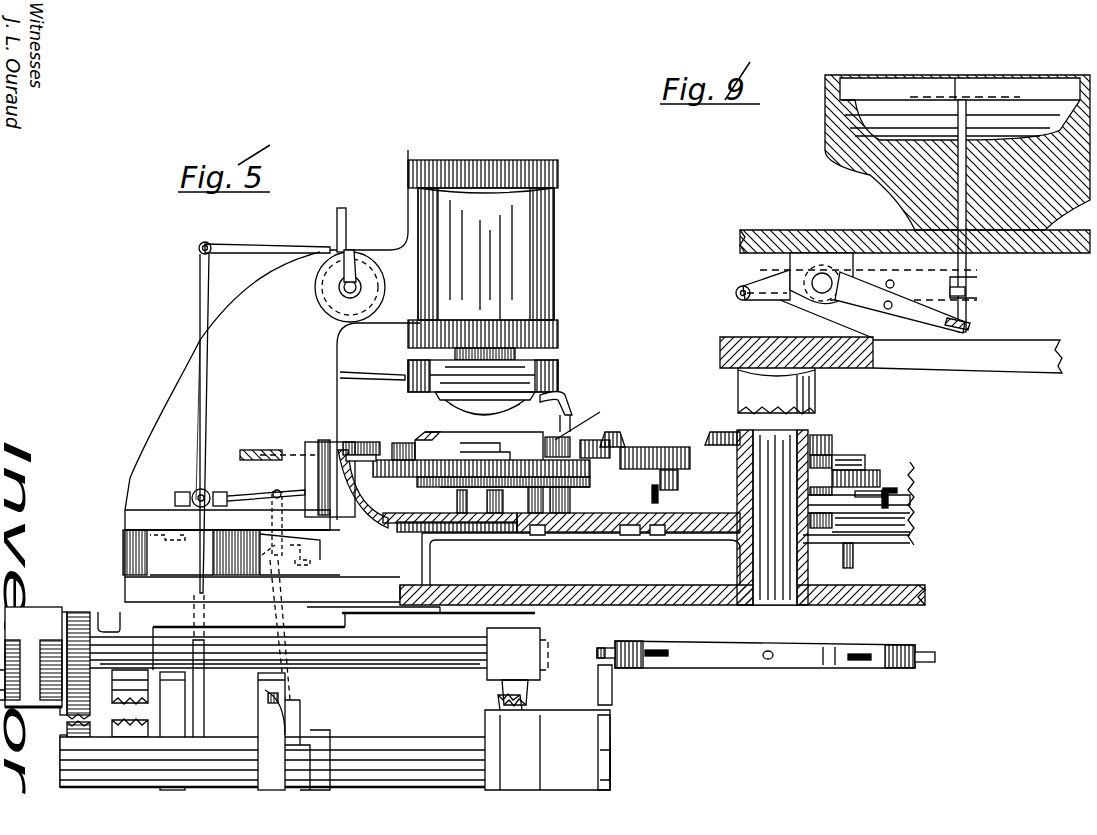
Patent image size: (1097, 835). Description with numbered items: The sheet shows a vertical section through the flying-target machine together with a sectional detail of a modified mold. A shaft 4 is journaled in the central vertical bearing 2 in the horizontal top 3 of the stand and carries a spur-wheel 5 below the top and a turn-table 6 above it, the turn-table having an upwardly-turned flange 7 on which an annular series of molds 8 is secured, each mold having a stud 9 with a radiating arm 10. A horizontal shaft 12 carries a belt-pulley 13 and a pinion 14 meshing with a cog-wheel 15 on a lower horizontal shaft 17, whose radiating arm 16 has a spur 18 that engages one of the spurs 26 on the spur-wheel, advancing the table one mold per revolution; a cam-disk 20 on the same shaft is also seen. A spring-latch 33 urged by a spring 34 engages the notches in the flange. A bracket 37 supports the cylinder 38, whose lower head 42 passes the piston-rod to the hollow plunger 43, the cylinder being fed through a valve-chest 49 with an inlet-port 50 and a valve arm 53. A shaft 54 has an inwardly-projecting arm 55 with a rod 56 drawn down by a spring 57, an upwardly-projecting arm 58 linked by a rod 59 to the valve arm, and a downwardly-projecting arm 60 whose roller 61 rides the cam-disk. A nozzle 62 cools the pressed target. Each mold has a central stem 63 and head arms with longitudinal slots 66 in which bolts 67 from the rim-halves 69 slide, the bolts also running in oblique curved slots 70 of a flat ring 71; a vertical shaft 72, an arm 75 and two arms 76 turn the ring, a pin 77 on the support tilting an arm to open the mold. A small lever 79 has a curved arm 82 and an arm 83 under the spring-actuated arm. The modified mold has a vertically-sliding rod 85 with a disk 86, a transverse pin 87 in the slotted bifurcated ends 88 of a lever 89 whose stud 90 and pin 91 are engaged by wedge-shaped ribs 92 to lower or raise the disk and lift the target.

In FIG. 5, the central vertical bearing 2 is at (662, 582).
In FIG. 5, the horizontal top 3 is at (432, 570).
In FIG. 5, the shaft 4 is at (772, 517).
In FIG. 5, the spur-wheel 5 is at (675, 652).
In FIG. 5, the turn-table 6 is at (383, 518).
In FIG. 5, the flange 7 is at (363, 489).
In FIG. 5, the mold 8 is at (600, 440).
In FIG. 5, the stud 9 is at (363, 435).
In FIG. 5, the radiating arm 10 is at (361, 446).
In FIG. 5, the horizontal shaft 12 is at (388, 660).
In FIG. 5, the belt-pulley 13 is at (31, 657).
In FIG. 5, the pinion 14 is at (92, 606).
In FIG. 5, the cog-wheel 15 is at (372, 369).
In FIG. 5, the radiating arm 16 is at (610, 726).
In FIG. 5, the horizontal shaft 17 is at (388, 760).
In FIG. 5, the spur 18 is at (597, 648).
In FIG. 5, the cam-disk 20 is at (148, 731).
In FIG. 5, the spur 26 is at (945, 660).
In FIG. 5, the spring-latch 33 is at (287, 441).
In FIG. 5, the spring 34 is at (261, 446).
In FIG. 5, the bracket 37 is at (272, 335).
In FIG. 5, the cylinder 38 is at (483, 240).
In FIG. 5, the lower head 42 is at (558, 345).
In FIG. 5, the hollow plunger 43 is at (483, 387).
In FIG. 5, the valve-chest 49 is at (350, 287).
In FIG. 5, the inlet-port 50 is at (354, 230).
In FIG. 5, the arm 53 is at (356, 268).
In FIG. 5, the shaft 54 is at (175, 500).
In FIG. 5, the inwardly-projecting arm 55 is at (260, 486).
In FIG. 5, the rod 56 is at (278, 522).
In FIG. 5, the spring 57 is at (300, 546).
In FIG. 5, the upwardly-projecting arm 58 is at (205, 430).
In FIG. 5, the rod 59 is at (264, 240).
In FIG. 5, the downwardly-projecting arm 60 is at (205, 553).
In FIG. 5, the roller 61 is at (205, 755).
In FIG. 5, the nozzle 62 is at (567, 402).
In FIG. 5, the central stem 63 is at (510, 499).
In FIG. 5, the longitudinal slot 66 is at (584, 415).
In FIG. 5, the bolt 67 is at (400, 436).
In FIG. 5, the rim-half 69 is at (481, 439).
In FIG. 5, the oblique curved slot 70 is at (393, 485).
In FIG. 5, the flat ring 71 is at (672, 462).
In FIG. 5, the vertical shaft 72 is at (652, 500).
In FIG. 5, the arm 75 is at (771, 491).
In FIG. 5, the arm 76 is at (550, 538).
In FIG. 5, the pin 77 is at (853, 556).
In FIG. 5, the small lever 79 is at (305, 480).
In FIG. 5, the curved arm 82 is at (330, 428).
In FIG. 5, the arm 83 is at (331, 480).
In FIG. 9, the vertically-sliding rod 85 is at (966, 268).
In FIG. 9, the disk 86 is at (957, 152).
In FIG. 9, the transverse pin 87 is at (970, 328).
In FIG. 9, the slotted bifurcated end 88 is at (968, 307).
In FIG. 9, the lever 89 is at (900, 302).
In FIG. 9, the stud 90 is at (856, 295).
In FIG. 9, the pin 91 is at (899, 285).
In FIG. 9, the wedge-shaped rib 92 is at (905, 322).